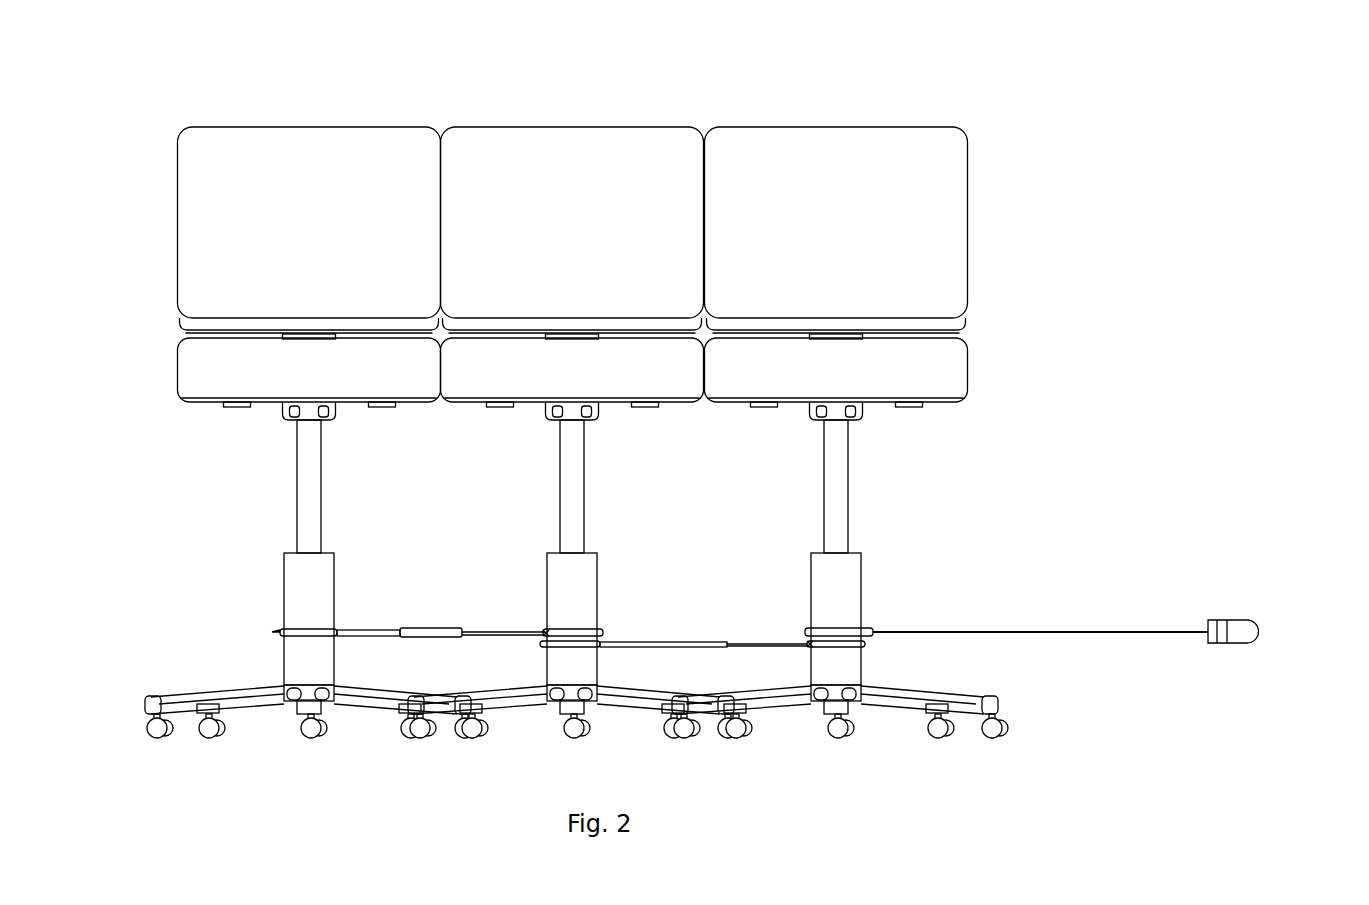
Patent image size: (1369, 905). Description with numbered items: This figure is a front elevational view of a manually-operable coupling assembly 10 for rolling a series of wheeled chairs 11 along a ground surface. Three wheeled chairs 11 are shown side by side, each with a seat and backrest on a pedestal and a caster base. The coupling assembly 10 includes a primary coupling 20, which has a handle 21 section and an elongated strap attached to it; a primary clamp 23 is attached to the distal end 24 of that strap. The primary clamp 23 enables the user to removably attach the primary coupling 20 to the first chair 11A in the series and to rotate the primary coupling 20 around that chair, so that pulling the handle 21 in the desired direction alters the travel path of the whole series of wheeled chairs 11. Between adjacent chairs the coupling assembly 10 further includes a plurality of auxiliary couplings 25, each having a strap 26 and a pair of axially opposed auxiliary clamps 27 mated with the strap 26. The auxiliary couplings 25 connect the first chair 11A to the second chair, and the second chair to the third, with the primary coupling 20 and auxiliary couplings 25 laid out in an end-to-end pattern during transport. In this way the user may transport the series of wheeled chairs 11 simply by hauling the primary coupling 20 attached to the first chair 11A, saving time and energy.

The manually-operable coupling assembly 10 is at (1180, 586).
The wheeled chairs 11 is at (190, 143).
The first chair 11A is at (903, 143).
The primary coupling 20 is at (1152, 750).
The handle 21 is at (1263, 625).
The primary clamp 23 is at (862, 628).
The distal end 24 is at (876, 630).
The auxiliary couplings 25 is at (357, 633).
The strap 26 is at (397, 631).
The auxiliary clamps 27 is at (282, 631).